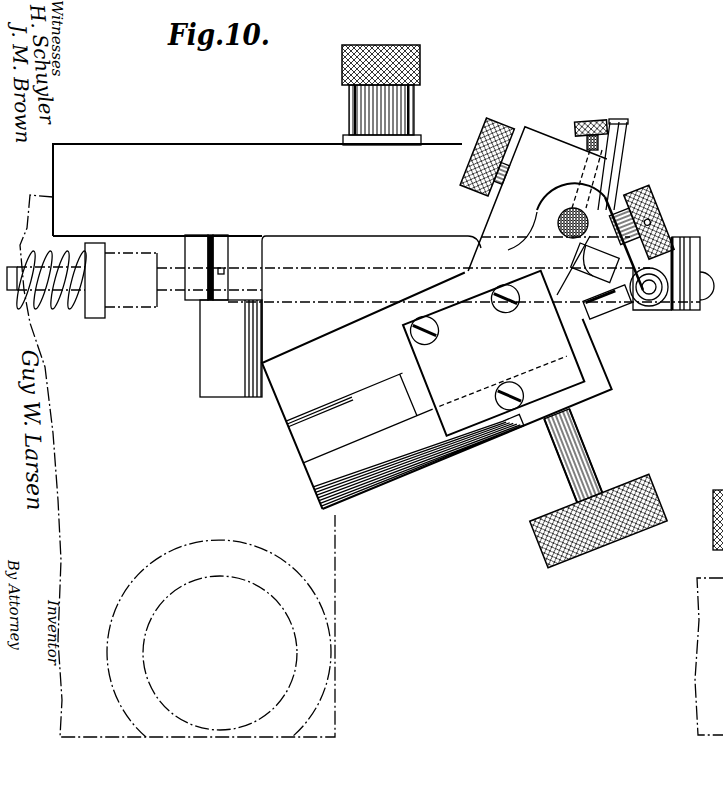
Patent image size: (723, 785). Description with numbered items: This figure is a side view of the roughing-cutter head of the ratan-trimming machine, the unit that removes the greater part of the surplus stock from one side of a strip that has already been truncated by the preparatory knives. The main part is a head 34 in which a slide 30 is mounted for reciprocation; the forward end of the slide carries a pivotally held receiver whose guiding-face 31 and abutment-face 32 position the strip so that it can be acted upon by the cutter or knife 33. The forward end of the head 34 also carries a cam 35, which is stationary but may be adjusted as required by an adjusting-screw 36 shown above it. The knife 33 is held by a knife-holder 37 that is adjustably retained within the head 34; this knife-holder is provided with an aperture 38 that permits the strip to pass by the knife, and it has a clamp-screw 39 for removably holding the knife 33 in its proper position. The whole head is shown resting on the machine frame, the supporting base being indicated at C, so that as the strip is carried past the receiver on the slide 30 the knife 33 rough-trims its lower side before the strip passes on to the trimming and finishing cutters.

The slide 30 is at (243, 245).
The guiding-face 31 is at (595, 263).
The abutment-face 32 is at (615, 312).
The cutter or knife 33 is at (597, 317).
The head 34 is at (267, 204).
The cam 35 is at (600, 210).
The adjusting-screw 36 is at (586, 120).
The knife-holder 37 is at (596, 336).
The aperture 38 is at (463, 411).
The clamp-screw 39 is at (653, 195).
The base C is at (371, 466).